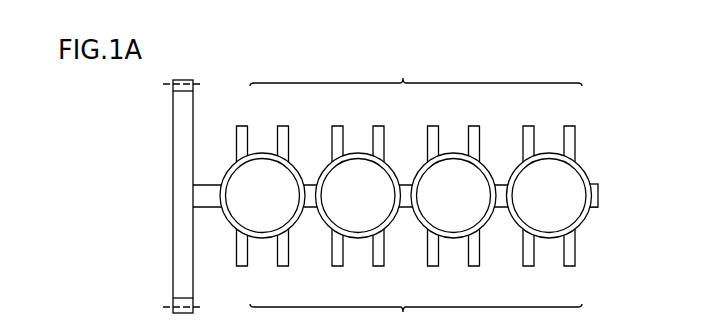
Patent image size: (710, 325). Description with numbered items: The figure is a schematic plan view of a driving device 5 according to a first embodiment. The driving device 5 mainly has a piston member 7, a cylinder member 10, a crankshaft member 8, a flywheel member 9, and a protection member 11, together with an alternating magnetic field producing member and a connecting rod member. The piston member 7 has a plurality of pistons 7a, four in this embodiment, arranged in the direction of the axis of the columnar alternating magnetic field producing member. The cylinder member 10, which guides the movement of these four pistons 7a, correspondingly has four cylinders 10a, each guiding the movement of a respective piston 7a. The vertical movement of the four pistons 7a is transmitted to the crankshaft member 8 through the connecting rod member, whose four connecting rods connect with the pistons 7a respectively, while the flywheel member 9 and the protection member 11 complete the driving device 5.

The driving device 5 is at (409, 191).
The piston member 7 is at (416, 314).
The piston 7a is at (406, 246).
The crankshaft member 8 is at (597, 199).
The flywheel member 9 is at (185, 143).
The cylinder member 10 is at (416, 71).
The cylinder 10a is at (263, 151).
The protection member 11 is at (415, 239).